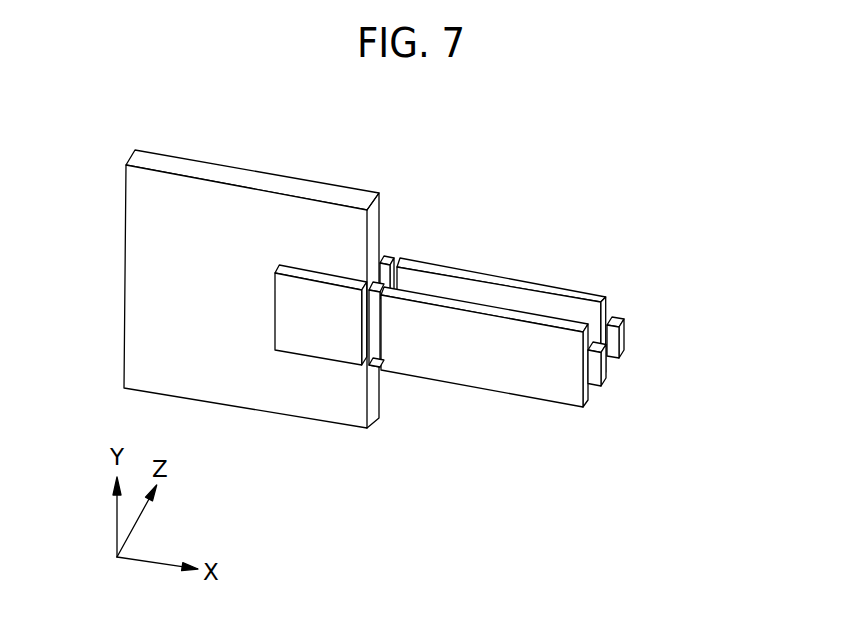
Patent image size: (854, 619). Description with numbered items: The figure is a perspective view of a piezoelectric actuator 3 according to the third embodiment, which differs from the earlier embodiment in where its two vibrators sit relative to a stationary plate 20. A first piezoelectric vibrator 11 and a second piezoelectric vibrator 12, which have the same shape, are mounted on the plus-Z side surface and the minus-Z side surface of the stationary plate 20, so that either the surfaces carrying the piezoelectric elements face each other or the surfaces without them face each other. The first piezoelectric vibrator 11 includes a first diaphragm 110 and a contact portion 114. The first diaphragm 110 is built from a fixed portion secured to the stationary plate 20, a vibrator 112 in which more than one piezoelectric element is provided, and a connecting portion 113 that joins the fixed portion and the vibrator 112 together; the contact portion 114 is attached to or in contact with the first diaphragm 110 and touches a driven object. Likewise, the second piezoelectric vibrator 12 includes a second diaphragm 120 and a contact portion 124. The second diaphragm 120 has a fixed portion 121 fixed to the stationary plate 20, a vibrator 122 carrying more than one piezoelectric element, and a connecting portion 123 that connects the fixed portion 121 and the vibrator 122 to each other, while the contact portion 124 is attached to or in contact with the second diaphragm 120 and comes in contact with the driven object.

The piezoelectric actuator 3 is at (683, 122).
The stationary plate 20 is at (205, 166).
The first piezoelectric vibrator 11 is at (518, 257).
The first diaphragm 110 is at (493, 268).
The vibrator 112 is at (449, 267).
The connecting portion 113 is at (387, 256).
The contact portion 114 is at (623, 297).
The second piezoelectric vibrator 12 is at (441, 409).
The second diaphragm 120 is at (431, 389).
The fixed portion 121 is at (321, 366).
The vibrator 122 is at (423, 381).
The connecting portion 123 is at (376, 367).
The contact portion 124 is at (584, 427).